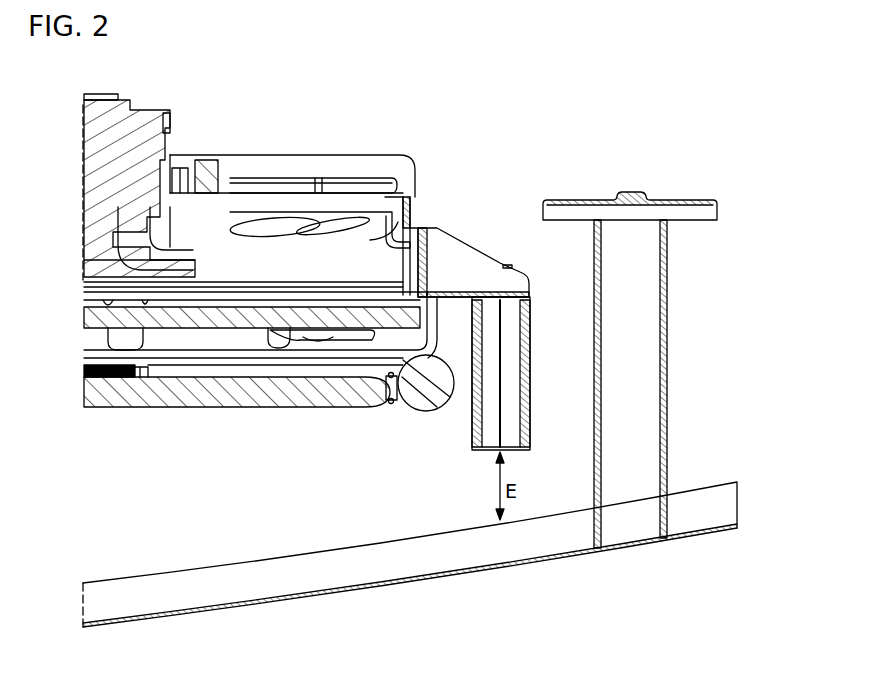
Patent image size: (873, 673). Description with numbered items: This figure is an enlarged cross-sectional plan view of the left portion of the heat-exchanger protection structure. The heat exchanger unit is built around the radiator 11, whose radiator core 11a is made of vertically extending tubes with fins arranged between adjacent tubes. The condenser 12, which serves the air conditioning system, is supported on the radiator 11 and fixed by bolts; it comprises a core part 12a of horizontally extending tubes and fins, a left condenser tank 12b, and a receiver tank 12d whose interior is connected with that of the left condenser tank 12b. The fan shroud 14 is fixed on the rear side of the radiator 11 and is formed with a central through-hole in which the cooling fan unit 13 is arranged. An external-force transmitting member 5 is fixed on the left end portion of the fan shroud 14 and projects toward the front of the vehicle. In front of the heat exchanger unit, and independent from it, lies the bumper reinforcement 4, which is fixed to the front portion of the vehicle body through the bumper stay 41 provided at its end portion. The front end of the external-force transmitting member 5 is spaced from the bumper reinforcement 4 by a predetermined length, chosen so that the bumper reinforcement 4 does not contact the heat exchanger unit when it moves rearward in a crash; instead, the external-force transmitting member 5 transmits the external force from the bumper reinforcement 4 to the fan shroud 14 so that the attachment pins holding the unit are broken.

The bumper reinforcement 4 is at (417, 557).
The external-force transmitting member 5 is at (472, 417).
The radiator 11 is at (171, 330).
The radiator core 11a is at (240, 326).
The condenser 12 is at (282, 408).
The core part 12a is at (130, 402).
The left condenser tank 12b is at (382, 403).
The receiver tank 12d is at (410, 410).
The cooling fan unit 13 is at (148, 143).
The fan shroud 14 is at (455, 262).
The bumper stay 41 is at (668, 362).